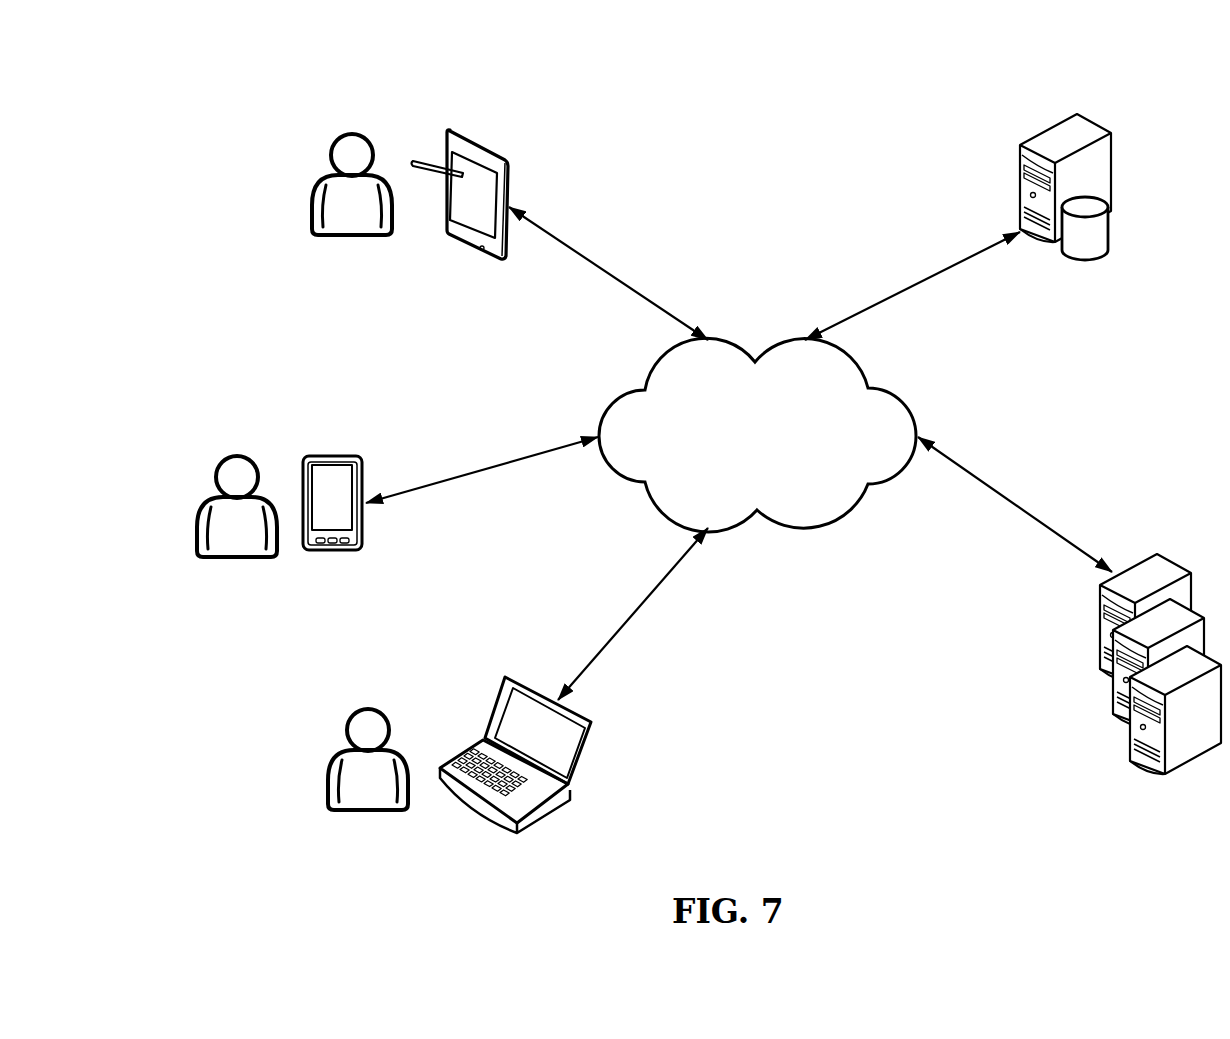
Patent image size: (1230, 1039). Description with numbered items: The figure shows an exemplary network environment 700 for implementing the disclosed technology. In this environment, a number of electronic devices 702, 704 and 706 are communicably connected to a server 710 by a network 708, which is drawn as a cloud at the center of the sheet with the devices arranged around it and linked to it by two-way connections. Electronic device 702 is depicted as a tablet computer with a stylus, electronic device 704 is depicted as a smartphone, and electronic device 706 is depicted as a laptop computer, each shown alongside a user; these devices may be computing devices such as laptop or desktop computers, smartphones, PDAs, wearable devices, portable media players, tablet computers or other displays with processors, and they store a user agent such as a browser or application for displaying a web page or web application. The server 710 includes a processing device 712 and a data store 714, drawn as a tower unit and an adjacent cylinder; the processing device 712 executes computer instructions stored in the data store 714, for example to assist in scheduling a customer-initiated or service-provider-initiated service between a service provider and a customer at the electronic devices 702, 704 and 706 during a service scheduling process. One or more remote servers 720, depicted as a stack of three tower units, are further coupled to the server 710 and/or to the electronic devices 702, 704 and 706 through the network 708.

The network environment 700 is at (190, 116).
The electronic device 702 is at (497, 152).
The electronic device 704 is at (333, 455).
The electronic device 706 is at (580, 768).
The network 708 is at (757, 435).
The server 710 is at (1069, 197).
The processing device 712 is at (1057, 123).
The data store 714 is at (1098, 248).
The remote servers 720 is at (1088, 702).